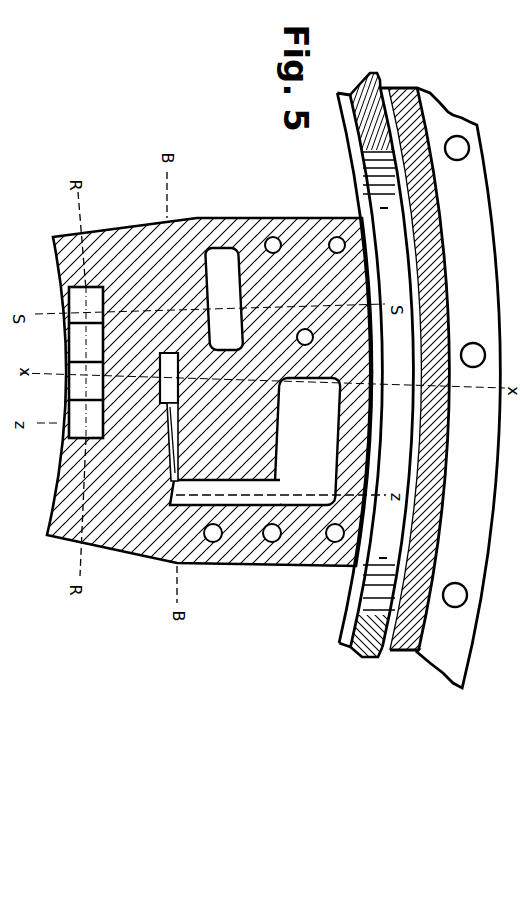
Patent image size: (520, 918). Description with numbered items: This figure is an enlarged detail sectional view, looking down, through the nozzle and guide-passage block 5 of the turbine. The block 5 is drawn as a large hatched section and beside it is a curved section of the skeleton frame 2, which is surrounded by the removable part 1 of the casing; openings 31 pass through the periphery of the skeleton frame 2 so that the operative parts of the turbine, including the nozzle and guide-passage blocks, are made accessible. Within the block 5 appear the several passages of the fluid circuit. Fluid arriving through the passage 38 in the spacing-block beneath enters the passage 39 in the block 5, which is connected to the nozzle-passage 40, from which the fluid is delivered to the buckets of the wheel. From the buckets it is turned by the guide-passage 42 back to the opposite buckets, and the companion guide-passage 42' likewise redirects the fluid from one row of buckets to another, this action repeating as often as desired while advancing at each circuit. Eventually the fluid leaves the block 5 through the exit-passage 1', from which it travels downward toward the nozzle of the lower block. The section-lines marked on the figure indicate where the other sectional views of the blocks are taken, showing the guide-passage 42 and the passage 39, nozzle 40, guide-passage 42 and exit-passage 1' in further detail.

The removable part of the casing 1 is at (440, 372).
The skeleton frame 2 is at (372, 80).
The nozzle or guide-passage block 5 is at (250, 218).
The openings 31 is at (400, 427).
The passage 38 is at (307, 441).
The passage 39 is at (260, 492).
The nozzle-passage 40 is at (172, 442).
The guide-passage 42 is at (70, 362).
The guide-passage 42' is at (140, 298).
The exit-passage 1' is at (224, 299).